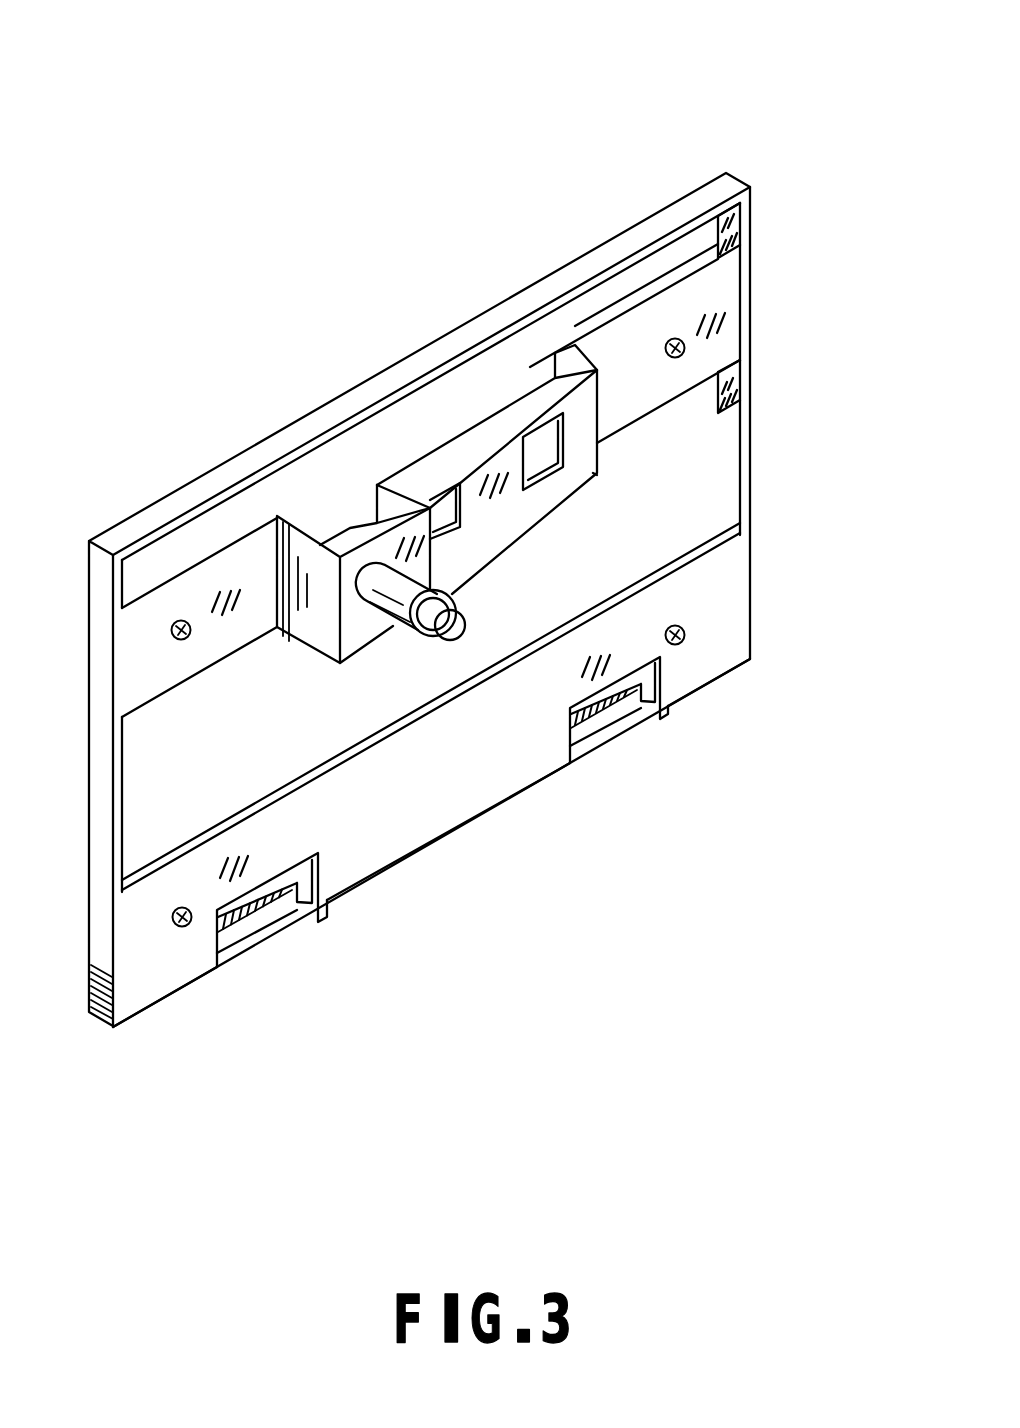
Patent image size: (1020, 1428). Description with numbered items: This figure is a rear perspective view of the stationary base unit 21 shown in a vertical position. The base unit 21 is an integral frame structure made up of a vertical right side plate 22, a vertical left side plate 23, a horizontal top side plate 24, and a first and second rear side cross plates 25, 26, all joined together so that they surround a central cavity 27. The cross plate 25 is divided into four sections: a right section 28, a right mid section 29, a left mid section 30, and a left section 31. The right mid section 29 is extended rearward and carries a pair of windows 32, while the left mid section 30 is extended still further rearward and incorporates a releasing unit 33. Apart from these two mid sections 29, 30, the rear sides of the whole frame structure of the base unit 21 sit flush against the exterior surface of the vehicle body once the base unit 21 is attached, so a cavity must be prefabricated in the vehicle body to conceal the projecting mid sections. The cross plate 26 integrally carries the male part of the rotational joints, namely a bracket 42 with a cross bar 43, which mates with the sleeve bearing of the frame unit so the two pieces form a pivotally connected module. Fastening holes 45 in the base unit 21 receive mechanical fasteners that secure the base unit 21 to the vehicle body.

The stationary base unit 21 is at (463, 320).
The vertical right side plate 22 is at (752, 418).
The vertical left side plate 23 is at (87, 1013).
The horizontal top side plate 24 is at (607, 237).
The first rear side cross plate 25 is at (597, 475).
The second rear side cross plate 26 is at (413, 783).
The central cavity 27 is at (567, 553).
The right section 28 is at (708, 334).
The right mid section 29 is at (542, 383).
The left mid section 30 is at (377, 488).
The left section 31 is at (234, 540).
The windows 32 is at (523, 437).
The releasing unit 33 is at (437, 643).
The bracket 42 is at (325, 917).
The cross bar 43 is at (257, 935).
The fastening holes 45 is at (675, 338).